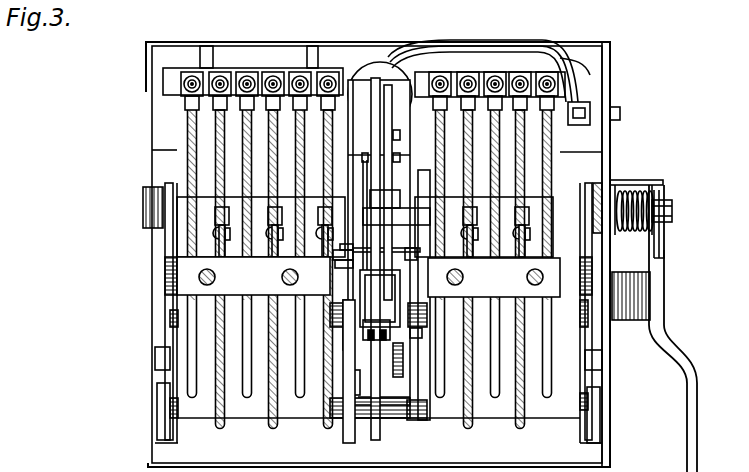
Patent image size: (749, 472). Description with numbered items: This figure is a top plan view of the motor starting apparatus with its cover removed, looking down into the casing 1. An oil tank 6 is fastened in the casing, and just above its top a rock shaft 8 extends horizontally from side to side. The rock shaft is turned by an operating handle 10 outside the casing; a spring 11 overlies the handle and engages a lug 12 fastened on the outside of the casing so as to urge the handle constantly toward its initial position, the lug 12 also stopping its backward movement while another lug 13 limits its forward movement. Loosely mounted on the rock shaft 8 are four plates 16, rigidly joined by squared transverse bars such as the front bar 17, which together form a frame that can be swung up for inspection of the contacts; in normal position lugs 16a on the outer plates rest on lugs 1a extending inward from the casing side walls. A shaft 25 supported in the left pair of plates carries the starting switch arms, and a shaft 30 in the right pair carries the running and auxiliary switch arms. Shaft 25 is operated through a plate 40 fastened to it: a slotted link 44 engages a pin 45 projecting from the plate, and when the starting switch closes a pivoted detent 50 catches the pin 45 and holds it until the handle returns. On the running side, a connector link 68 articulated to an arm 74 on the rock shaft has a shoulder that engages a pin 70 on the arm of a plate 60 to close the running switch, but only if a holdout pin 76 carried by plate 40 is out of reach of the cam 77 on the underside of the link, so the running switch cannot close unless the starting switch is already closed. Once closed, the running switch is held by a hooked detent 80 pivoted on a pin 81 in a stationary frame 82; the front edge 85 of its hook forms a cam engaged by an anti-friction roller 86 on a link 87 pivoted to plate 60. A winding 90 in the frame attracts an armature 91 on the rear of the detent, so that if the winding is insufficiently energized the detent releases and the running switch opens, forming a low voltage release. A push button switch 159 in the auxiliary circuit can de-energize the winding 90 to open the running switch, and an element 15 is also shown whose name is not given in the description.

The casing 1 is at (284, 41).
The lug 1a is at (157, 360).
The oil tank 6 is at (268, 466).
The rock shaft 8 is at (342, 200).
The operating handle 10 is at (673, 353).
The spring 11 is at (640, 236).
The lug 12 is at (633, 322).
The lug 13 is at (646, 181).
The bottom strip 15 is at (378, 453).
The plate 16 is at (168, 183).
The lug 16a is at (160, 378).
The transverse bar 17 is at (178, 422).
The shaft 25 is at (311, 300).
The shaft 30 is at (452, 299).
The plate 40 is at (357, 382).
The link 44 is at (344, 318).
The pin 45 is at (343, 350).
The detent 50 is at (352, 433).
The plate 60 is at (397, 360).
The connector link 68 is at (380, 345).
The pin 70 is at (423, 334).
The arm 74 is at (361, 259).
The pin 76 is at (373, 246).
The cam 77 is at (398, 250).
The detent 80 is at (406, 180).
The pin 81 is at (390, 156).
The stationary frame 82 is at (400, 137).
The front edge 85 is at (384, 216).
The anti-friction roller 86 is at (356, 275).
The link 87 is at (356, 284).
The winding 90 is at (362, 70).
The armature 91 is at (366, 92).
The push button switch 159 is at (591, 126).